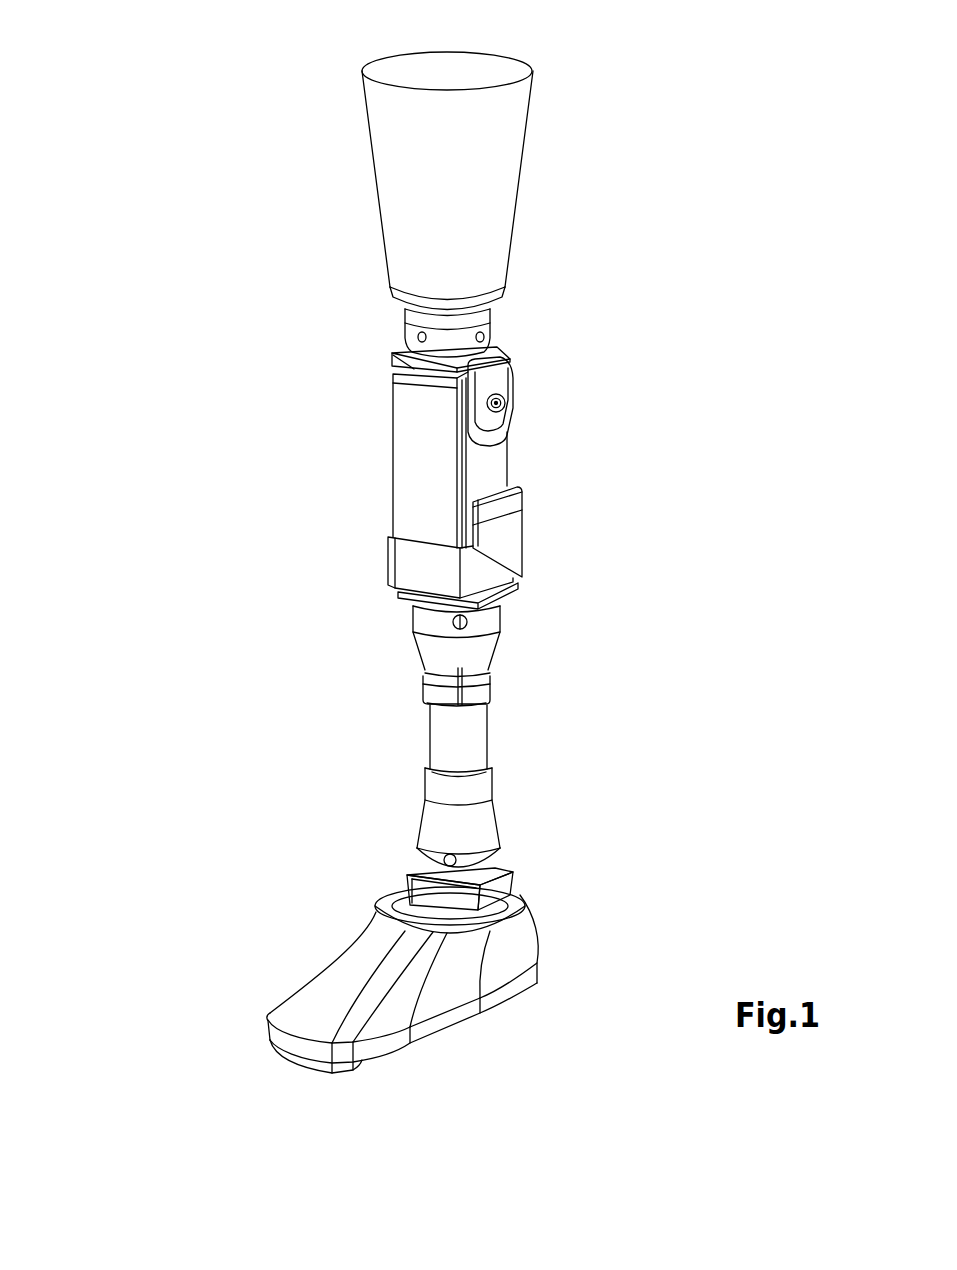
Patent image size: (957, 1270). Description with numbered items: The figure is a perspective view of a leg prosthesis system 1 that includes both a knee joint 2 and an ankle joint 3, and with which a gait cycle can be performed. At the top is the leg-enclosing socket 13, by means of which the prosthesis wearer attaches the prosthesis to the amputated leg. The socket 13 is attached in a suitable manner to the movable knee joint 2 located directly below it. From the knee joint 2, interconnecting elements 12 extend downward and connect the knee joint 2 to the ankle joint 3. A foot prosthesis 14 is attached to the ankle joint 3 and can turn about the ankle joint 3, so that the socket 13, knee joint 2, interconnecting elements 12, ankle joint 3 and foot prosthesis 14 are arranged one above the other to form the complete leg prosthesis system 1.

The leg prosthesis system 1 is at (159, 547).
The leg-enclosing socket 13 is at (607, 165).
The knee joint 2 is at (612, 358).
The interconnecting elements 12 is at (621, 713).
The ankle joint 3 is at (624, 862).
The foot prosthesis 14 is at (262, 916).